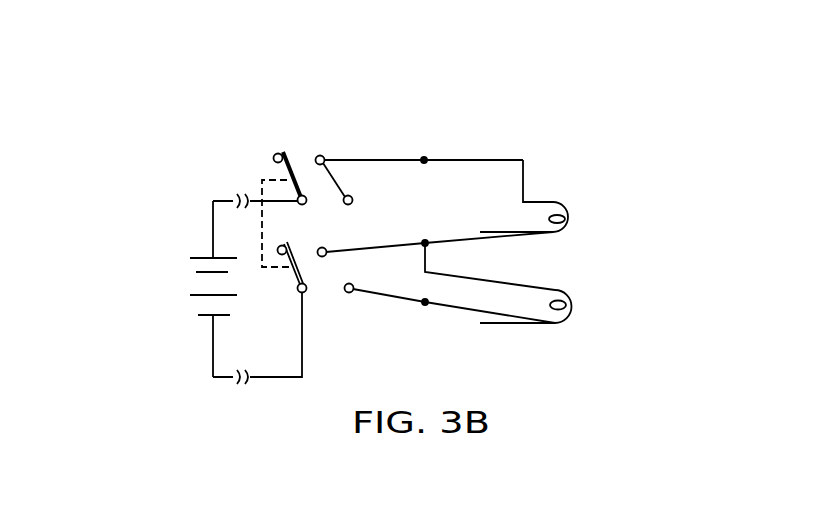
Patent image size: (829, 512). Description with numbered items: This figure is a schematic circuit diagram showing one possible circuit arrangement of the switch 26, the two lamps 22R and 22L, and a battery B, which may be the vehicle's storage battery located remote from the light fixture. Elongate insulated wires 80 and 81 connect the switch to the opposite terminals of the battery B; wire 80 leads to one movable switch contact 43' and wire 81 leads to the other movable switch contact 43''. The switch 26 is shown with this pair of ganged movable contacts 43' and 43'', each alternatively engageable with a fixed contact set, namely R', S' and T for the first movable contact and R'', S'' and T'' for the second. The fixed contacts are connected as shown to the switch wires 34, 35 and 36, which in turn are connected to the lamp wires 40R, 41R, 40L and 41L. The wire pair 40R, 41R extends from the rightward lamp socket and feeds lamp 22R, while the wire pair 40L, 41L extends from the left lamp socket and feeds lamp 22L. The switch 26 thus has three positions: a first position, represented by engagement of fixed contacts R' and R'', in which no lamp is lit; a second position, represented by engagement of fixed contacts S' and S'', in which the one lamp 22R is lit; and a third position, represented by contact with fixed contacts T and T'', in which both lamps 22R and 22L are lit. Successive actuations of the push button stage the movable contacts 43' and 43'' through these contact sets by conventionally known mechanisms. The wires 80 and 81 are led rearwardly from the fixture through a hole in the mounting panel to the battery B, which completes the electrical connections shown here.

The battery B is at (190, 258).
The insulated wire 80 is at (213, 216).
The insulated wire 81 is at (213, 348).
The switch 26 is at (253, 170).
The movable switch contact 43' is at (309, 130).
The movable switch contact 43'' is at (277, 294).
The fixed contact R' is at (275, 131).
The fixed contact R'' is at (288, 232).
The fixed contact S' is at (328, 148).
The fixed contact S'' is at (335, 231).
The fixed contact T is at (365, 187).
The fixed contact T'' is at (337, 314).
The insulated wire 34 is at (368, 159).
The insulated wire 35 is at (378, 246).
The insulated wire 36 is at (390, 300).
The insulated wire 40R is at (457, 159).
The insulated wire 41R is at (497, 234).
The insulated wire 40L is at (505, 285).
The insulated wire 41L is at (487, 316).
The lamp 22R is at (568, 208).
The lamp 22L is at (572, 310).